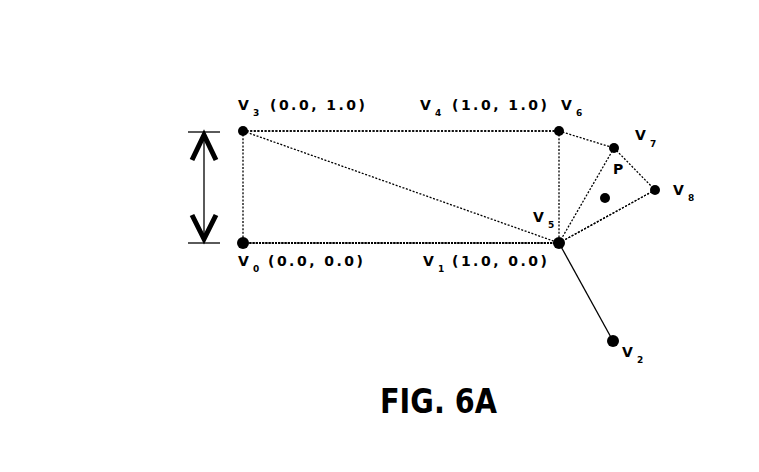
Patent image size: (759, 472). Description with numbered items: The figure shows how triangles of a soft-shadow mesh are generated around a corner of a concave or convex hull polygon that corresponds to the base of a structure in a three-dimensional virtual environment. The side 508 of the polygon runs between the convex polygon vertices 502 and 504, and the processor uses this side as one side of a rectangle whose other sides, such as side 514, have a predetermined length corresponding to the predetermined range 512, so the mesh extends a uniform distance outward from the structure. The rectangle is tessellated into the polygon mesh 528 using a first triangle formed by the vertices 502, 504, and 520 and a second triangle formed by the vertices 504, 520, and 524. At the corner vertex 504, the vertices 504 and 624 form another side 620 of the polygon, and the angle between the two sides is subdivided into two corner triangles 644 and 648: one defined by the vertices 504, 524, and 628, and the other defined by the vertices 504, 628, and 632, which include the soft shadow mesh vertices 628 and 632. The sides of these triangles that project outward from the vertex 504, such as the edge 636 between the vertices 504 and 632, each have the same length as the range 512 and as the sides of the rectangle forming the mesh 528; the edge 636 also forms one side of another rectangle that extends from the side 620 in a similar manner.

The convex polygon vertex 502 is at (239, 247).
The corner vertex 504 is at (560, 249).
The side of the polygon 508 is at (445, 244).
The predetermined range 512 is at (204, 200).
The side of the rectangle 514 is at (241, 232).
The soft shadow mesh vertex 520 is at (240, 129).
The soft shadow mesh vertex 524 is at (559, 127).
The polygon mesh 528 is at (423, 129).
The side of the polygon 620 is at (597, 309).
The convex polygon vertex 624 is at (607, 346).
The soft shadow mesh vertex 628 is at (616, 144).
The soft shadow mesh vertex 632 is at (658, 193).
The edge 636 is at (598, 226).
The corner triangle 644 is at (598, 122).
The corner triangle 648 is at (658, 164).